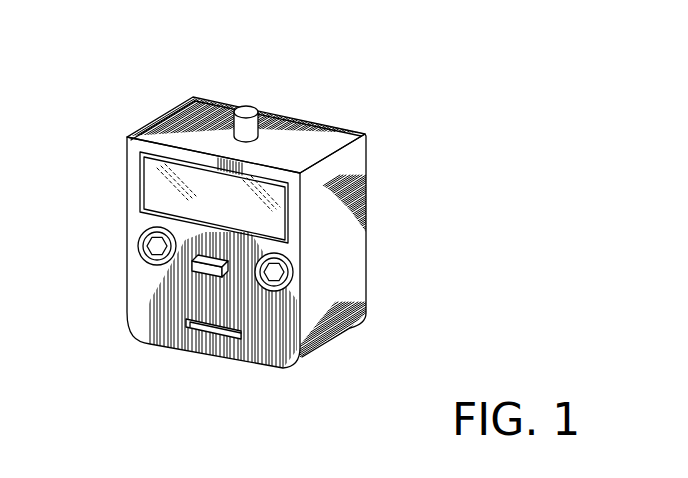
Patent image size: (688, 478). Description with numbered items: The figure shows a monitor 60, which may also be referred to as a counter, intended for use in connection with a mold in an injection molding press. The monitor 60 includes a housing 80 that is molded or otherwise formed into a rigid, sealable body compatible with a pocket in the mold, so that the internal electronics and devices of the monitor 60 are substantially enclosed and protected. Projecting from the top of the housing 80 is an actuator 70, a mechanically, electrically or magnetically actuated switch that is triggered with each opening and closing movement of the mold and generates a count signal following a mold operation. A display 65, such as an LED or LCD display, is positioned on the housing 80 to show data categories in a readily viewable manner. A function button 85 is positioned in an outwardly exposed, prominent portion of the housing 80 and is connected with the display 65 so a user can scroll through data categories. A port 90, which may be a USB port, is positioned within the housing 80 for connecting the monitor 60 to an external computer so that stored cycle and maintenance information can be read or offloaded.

The monitor 60 is at (428, 140).
The display 65 is at (150, 188).
The actuator 70 is at (248, 110).
The housing 80 is at (343, 245).
The push button 85 is at (193, 270).
The port 90 is at (247, 338).